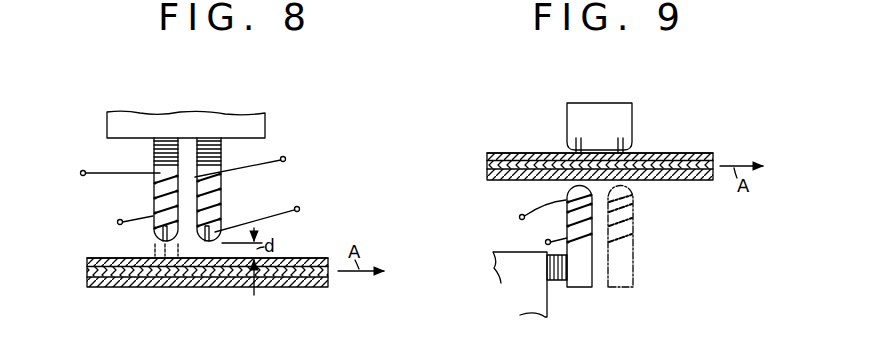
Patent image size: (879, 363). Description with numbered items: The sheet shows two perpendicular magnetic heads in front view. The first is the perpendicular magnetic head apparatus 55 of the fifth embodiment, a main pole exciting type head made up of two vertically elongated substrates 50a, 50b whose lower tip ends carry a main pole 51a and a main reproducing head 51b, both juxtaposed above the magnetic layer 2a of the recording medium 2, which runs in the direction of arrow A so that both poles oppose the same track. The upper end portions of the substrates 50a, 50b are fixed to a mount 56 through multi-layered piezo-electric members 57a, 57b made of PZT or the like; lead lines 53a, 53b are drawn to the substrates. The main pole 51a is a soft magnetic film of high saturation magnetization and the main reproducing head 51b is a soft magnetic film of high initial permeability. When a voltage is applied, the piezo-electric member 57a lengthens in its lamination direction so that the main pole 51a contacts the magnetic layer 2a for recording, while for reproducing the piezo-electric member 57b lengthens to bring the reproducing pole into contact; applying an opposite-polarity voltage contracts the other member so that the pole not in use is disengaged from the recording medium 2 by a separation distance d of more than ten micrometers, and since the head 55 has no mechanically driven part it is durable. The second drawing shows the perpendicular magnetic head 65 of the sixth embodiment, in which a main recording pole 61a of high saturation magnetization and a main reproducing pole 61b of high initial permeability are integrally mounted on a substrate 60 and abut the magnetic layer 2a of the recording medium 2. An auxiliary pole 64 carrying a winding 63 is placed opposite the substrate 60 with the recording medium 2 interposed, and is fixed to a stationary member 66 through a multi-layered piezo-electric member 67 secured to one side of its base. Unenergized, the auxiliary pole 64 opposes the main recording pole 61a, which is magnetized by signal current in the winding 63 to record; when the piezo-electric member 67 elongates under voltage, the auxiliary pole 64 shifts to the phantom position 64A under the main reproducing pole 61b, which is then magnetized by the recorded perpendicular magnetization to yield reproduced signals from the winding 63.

In FIG. 8, the recording medium 2 is at (93, 255).
In FIG. 9, the recording medium 2 is at (703, 151).
In FIG. 8, the magnetic layer 2a is at (320, 257).
In FIG. 9, the magnetic layer 2a is at (495, 152).
In FIG. 8, the substrate 50a is at (158, 190).
In FIG. 8, the substrate 50b is at (222, 172).
In FIG. 8, the main pole 51a is at (157, 237).
In FIG. 8, the main reproducing head 51b is at (222, 232).
In FIG. 8, the lead wire 53a is at (94, 177).
In FIG. 8, the lead wire 53b is at (283, 156).
In FIG. 8, the perpendicular magnetic head apparatus 55 is at (291, 190).
In FIG. 8, the mount 56 is at (181, 119).
In FIG. 8, the multi-layered piezo-electric member 57a is at (160, 155).
In FIG. 8, the multi-layered piezo-electric member 57b is at (209, 145).
In FIG. 9, the substrate 60 is at (608, 110).
In FIG. 9, the main recording pole 61a is at (572, 146).
In FIG. 9, the main reproducing pole 61b is at (623, 146).
In FIG. 9, the winding 63 is at (536, 207).
In FIG. 9, the auxiliary pole 64 is at (580, 281).
In FIG. 9, the position of auxiliary pole 64A is at (630, 258).
In FIG. 9, the perpendicular magnetic head 65 is at (684, 121).
In FIG. 9, the stationary member 66 is at (520, 256).
In FIG. 9, the multi-layered piezo-electric member 67 is at (553, 268).